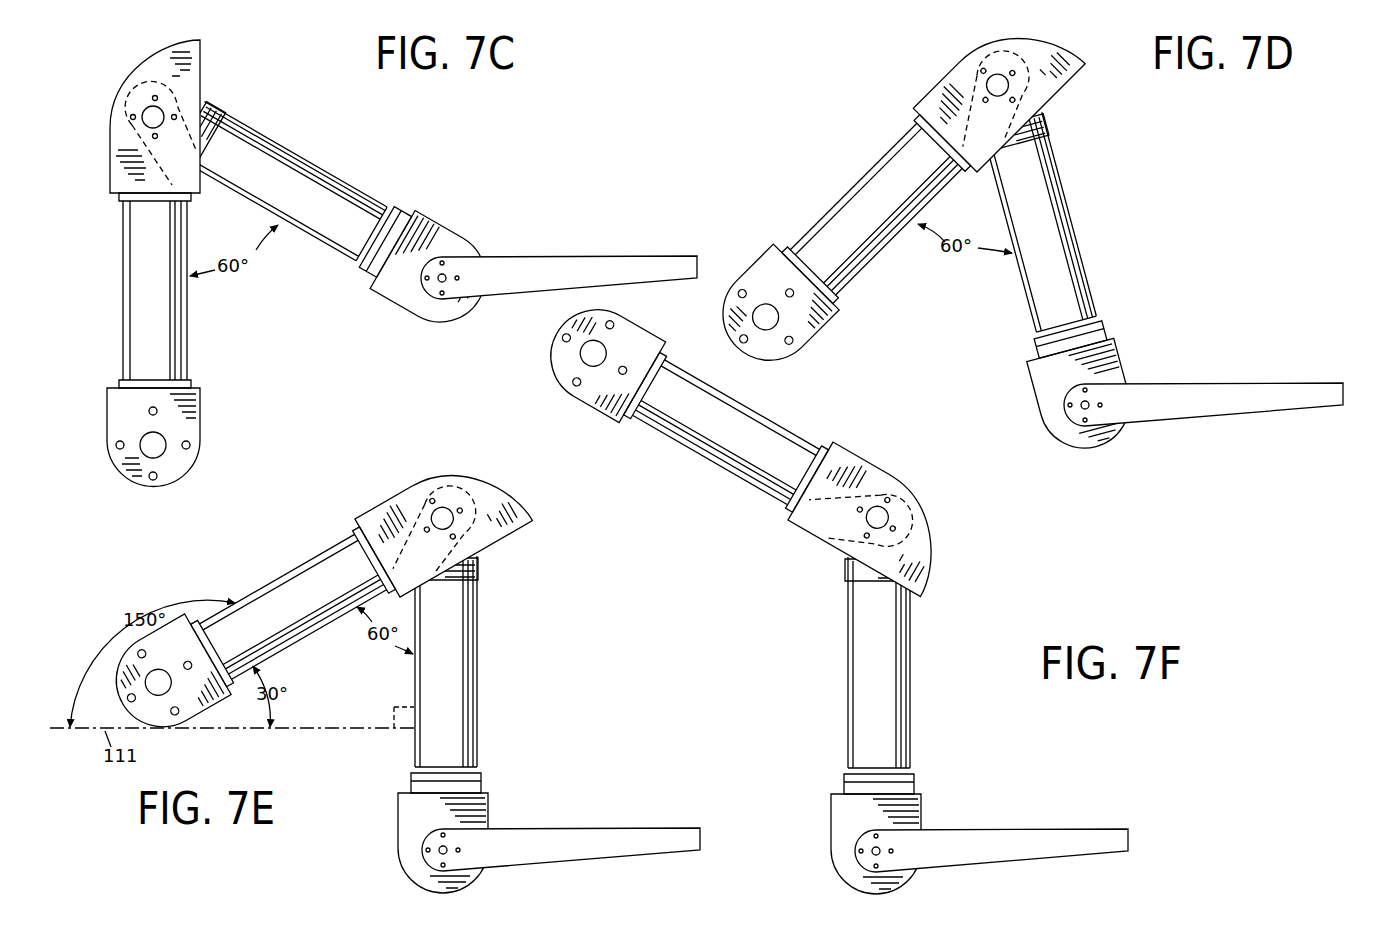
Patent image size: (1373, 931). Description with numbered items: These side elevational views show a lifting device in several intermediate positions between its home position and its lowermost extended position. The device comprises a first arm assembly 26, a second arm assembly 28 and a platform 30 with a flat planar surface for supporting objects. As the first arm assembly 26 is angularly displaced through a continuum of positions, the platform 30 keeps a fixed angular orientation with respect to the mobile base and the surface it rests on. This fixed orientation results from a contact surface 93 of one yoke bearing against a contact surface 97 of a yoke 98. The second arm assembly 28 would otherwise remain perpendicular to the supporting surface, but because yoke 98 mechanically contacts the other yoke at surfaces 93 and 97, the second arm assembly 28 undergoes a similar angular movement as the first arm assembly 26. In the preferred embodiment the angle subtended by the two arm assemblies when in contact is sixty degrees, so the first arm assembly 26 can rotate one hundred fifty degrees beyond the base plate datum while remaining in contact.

In FIG. 7C, the first arm assembly 26 is at (189, 315).
In FIG. 7D, the first arm assembly 26 is at (870, 268).
In FIG. 7E, the first arm assembly 26 is at (303, 560).
In FIG. 7F, the first arm assembly 26 is at (722, 469).
In FIG. 7C, the second arm assembly 28 is at (276, 149).
In FIG. 7D, the second arm assembly 28 is at (1083, 262).
In FIG. 7E, the second arm assembly 28 is at (476, 708).
In FIG. 7F, the second arm assembly 28 is at (908, 694).
In FIG. 7C, the platform 30 is at (607, 260).
In FIG. 7D, the platform 30 is at (1270, 386).
In FIG. 7E, the platform 30 is at (627, 827).
In FIG. 7F, the platform 30 is at (1071, 831).
In FIG. 7C, the surface of yoke 93 is at (169, 187).
In FIG. 7D, the surface of yoke 93 is at (999, 86).
In FIG. 7E, the surface of yoke 93 is at (388, 569).
In FIG. 7C, the surface of yoke 97 is at (160, 133).
In FIG. 7D, the surface of yoke 97 is at (991, 101).
In FIG. 7E, the surface of yoke 97 is at (431, 532).
In FIG. 7C, the yoke 98 is at (217, 110).
In FIG. 7D, the yoke 98 is at (1047, 123).
In FIG. 7E, the yoke 98 is at (480, 563).
In FIG. 7F, the yoke 98 is at (845, 571).